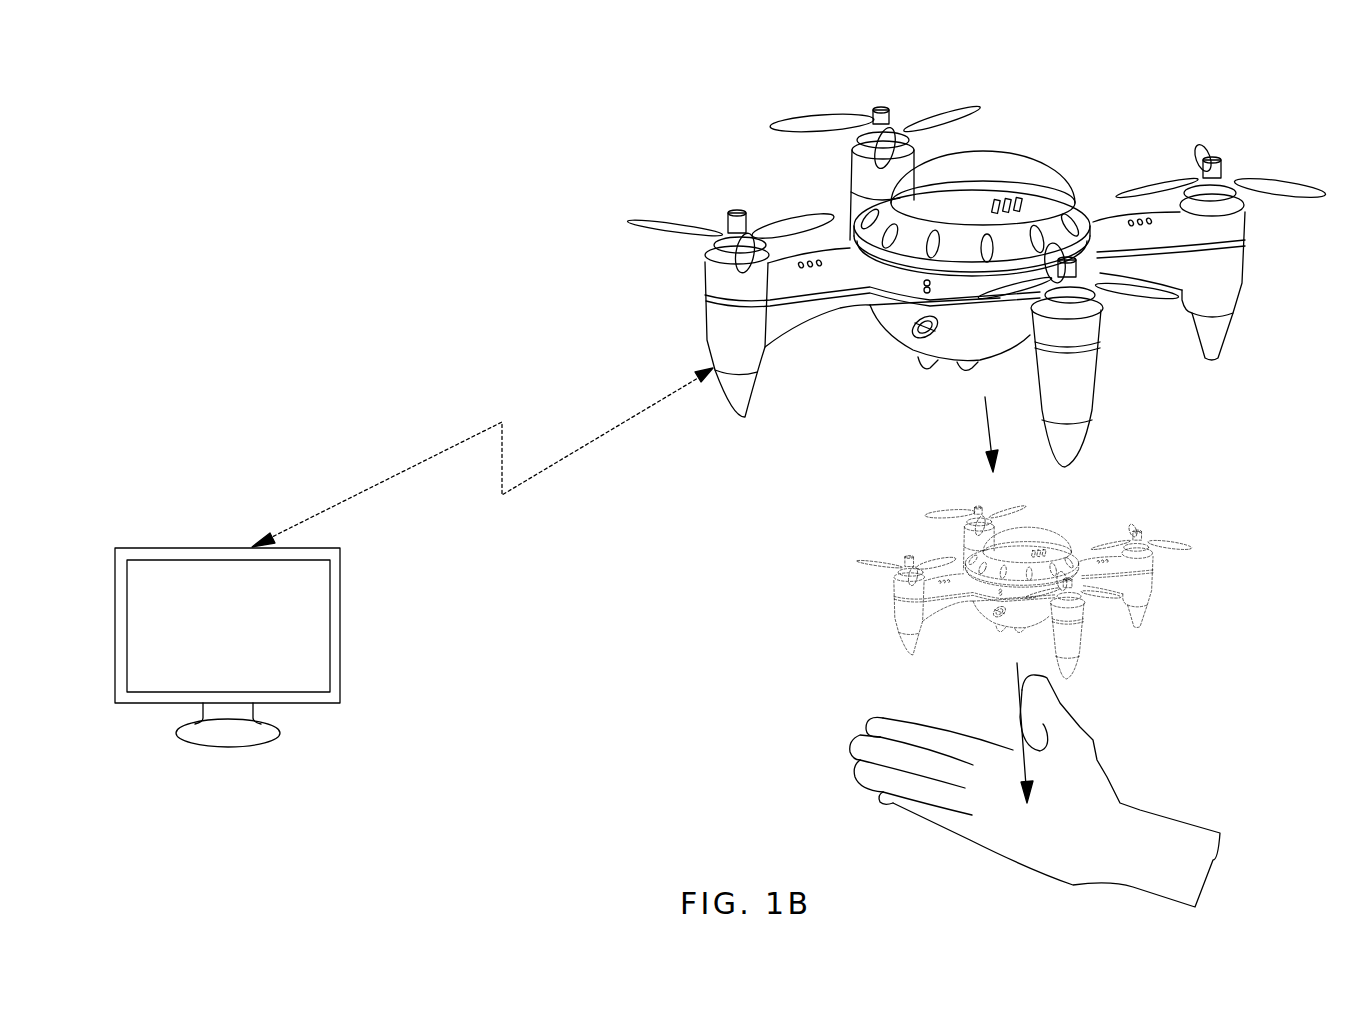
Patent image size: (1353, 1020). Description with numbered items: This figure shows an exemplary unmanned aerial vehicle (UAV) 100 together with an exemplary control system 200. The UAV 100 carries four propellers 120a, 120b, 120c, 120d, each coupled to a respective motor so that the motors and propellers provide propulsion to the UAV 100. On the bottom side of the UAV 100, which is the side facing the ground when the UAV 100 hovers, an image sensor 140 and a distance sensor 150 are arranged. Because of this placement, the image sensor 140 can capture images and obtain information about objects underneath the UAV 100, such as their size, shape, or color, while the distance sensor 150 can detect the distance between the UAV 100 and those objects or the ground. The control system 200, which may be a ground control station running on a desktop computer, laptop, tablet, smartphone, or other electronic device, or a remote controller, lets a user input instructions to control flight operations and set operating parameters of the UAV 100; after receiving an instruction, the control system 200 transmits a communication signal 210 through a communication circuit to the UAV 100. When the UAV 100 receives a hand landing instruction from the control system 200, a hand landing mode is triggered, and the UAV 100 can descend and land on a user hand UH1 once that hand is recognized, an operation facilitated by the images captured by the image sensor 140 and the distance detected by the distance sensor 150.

The unmanned aerial vehicle 100 is at (932, 249).
The propeller 120a is at (1198, 143).
The propeller 120b is at (878, 108).
The propeller 120c is at (1105, 310).
The propeller 120d is at (735, 211).
The image sensor 140 is at (917, 360).
The distance sensor 150 is at (964, 365).
The control system 200 is at (203, 545).
The communication signal 210 is at (460, 440).
The user hand UH1 is at (1178, 823).